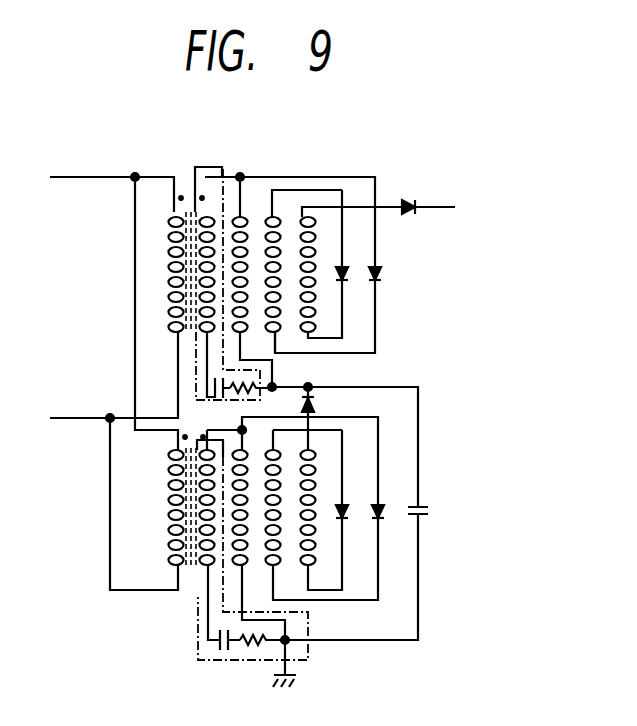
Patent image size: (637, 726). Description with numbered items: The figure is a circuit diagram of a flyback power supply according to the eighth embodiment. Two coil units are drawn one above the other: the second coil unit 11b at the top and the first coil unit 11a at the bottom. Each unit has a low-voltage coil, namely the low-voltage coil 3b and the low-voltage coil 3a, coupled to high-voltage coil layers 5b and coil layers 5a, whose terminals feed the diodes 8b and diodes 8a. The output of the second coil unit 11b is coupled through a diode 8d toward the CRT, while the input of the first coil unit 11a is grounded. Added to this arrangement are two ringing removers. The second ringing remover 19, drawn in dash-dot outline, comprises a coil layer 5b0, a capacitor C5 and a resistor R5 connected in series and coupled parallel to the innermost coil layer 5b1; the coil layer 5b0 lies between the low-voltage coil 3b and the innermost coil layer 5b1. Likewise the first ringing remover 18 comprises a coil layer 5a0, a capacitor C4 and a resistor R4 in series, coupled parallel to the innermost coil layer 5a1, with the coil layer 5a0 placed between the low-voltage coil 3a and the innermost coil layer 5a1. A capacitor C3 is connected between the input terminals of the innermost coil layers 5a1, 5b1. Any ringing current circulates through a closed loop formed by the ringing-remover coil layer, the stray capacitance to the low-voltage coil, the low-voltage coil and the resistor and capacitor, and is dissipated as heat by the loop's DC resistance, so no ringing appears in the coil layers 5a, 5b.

The low-voltage coil 3a is at (178, 568).
The low-voltage coil 3b is at (168, 268).
The high-voltage coil layers 5a is at (312, 470).
The coil layer 5a0 is at (200, 578).
The innermost coil layer 5a1 is at (243, 568).
The high-voltage coil layers 5b is at (277, 218).
The coil layer 5b0 is at (194, 206).
The innermost coil layer 5b1 is at (243, 216).
The diodes 8a is at (346, 520).
The diodes 8b is at (345, 282).
The diode 8d is at (405, 200).
The first coil unit 11a is at (342, 610).
The second coil unit 11b is at (261, 192).
The first ringing remover 18 is at (305, 663).
The second ringing remover 19 is at (208, 165).
The capacitor C3 is at (428, 510).
The capacitor C4 is at (220, 648).
The capacitor C5 is at (212, 390).
The resistor R4 is at (248, 648).
The resistor R5 is at (262, 384).